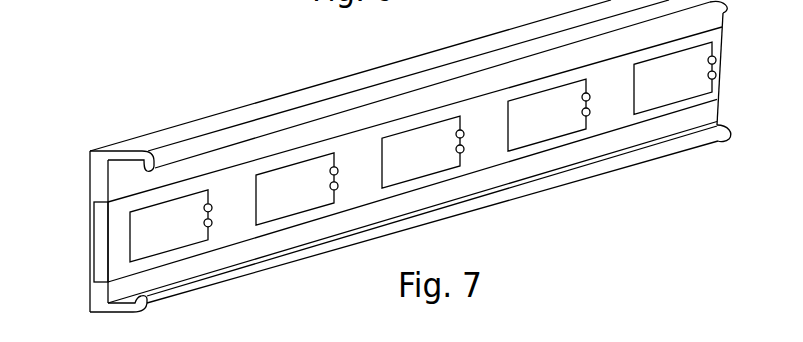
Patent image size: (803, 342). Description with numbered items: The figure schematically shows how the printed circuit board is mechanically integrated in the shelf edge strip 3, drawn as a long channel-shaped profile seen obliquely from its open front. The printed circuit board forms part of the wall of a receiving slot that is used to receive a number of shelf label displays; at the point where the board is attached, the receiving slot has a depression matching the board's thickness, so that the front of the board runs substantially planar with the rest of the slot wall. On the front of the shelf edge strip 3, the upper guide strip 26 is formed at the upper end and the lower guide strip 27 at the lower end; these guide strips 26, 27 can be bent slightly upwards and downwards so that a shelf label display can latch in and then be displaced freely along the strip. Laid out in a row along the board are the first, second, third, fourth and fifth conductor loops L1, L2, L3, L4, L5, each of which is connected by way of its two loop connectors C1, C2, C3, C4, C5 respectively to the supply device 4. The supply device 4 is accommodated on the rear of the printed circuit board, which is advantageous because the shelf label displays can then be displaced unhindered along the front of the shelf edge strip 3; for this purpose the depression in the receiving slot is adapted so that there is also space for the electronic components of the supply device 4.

The shelf edge strip 3 is at (98, 171).
The supply device 4 is at (115, 236).
The upper guide strip 26 is at (217, 143).
The lower guide strip 27 is at (193, 290).
The first conductor loop L1 is at (670, 97).
The second conductor loop L2 is at (544, 134).
The third conductor loop L3 is at (418, 171).
The fourth conductor loop L4 is at (292, 208).
The fifth conductor loop L5 is at (166, 245).
The first loop connectors C1 is at (716, 74).
The second loop connectors C2 is at (590, 111).
The third loop connectors C3 is at (464, 148).
The fourth loop connectors C4 is at (338, 185).
The fifth loop connectors C5 is at (212, 222).